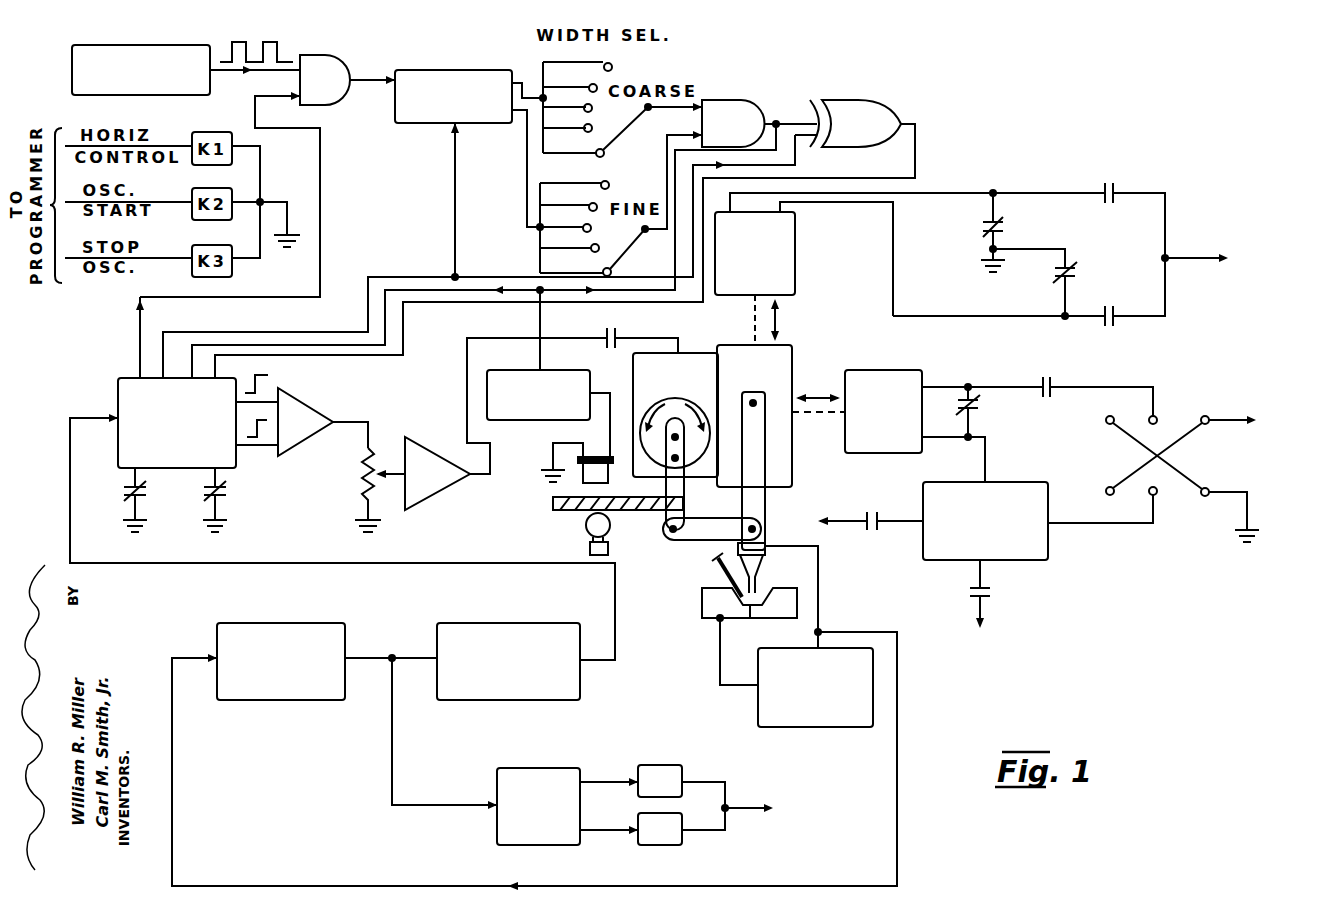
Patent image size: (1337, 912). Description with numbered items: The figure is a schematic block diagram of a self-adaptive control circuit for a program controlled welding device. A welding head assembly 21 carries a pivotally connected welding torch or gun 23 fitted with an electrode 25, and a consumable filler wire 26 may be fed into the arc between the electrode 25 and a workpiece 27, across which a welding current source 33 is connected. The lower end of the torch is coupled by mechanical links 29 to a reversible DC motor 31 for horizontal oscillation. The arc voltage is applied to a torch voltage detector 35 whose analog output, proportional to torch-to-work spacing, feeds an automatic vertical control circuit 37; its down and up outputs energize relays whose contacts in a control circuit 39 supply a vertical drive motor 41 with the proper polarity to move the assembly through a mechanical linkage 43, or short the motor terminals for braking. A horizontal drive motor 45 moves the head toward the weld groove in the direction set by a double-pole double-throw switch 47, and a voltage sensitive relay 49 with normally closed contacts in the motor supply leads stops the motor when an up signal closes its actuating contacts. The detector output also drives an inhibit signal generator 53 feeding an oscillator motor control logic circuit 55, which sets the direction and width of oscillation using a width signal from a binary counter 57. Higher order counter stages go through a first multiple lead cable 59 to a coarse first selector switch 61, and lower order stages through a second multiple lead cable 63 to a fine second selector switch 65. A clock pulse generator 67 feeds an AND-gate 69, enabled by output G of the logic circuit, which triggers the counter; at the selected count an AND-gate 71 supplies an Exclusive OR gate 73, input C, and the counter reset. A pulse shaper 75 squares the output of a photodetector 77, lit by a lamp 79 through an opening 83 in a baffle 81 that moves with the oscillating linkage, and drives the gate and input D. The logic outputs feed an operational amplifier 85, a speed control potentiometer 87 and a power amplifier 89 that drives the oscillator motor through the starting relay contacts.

The welding head assembly 21 is at (792, 369).
The welding torch or gun 23 is at (766, 452).
The electrode 25 is at (762, 588).
The consumable filler wire 26 is at (716, 572).
The workpiece 27 is at (758, 619).
The mechanical links 29 is at (662, 525).
The reversible DC motor 31 is at (633, 371).
The welding current source 33 is at (857, 727).
The torch voltage detector 35 is at (281, 622).
The automatic vertical control circuit 37 is at (514, 768).
The control circuit 39 is at (1036, 238).
The vertical drive motor 41 is at (795, 278).
The mechanical linkage 43 is at (752, 310).
The horizontal drive motor 45 is at (926, 380).
The double-pole double-throw switch 47 is at (1168, 496).
The voltage sensitive relay 49 is at (1012, 482).
The inhibit signal generator 53 is at (497, 623).
The oscillator motor control logic circuit 55 is at (118, 393).
The binary counter 57 is at (440, 70).
The first multiple lead cable 59 is at (522, 78).
The first selector switch 61 is at (627, 126).
The second multiple lead cable 63 is at (527, 172).
The second selector switch 65 is at (633, 244).
The clock pulse generator 67 is at (150, 45).
The AND-gate 69 is at (318, 57).
The AND-gate 71 is at (738, 106).
The Exclusive OR gate 73 is at (898, 109).
The pulse shaper 75 is at (520, 371).
The photodetector 77 is at (610, 481).
The lamp 79 is at (612, 549).
The baffle 81 is at (553, 505).
The opening 83 is at (588, 511).
The operational amplifier 85 is at (310, 408).
The speed control potentiometer 87 is at (373, 450).
The power amplifier 89 is at (427, 455).